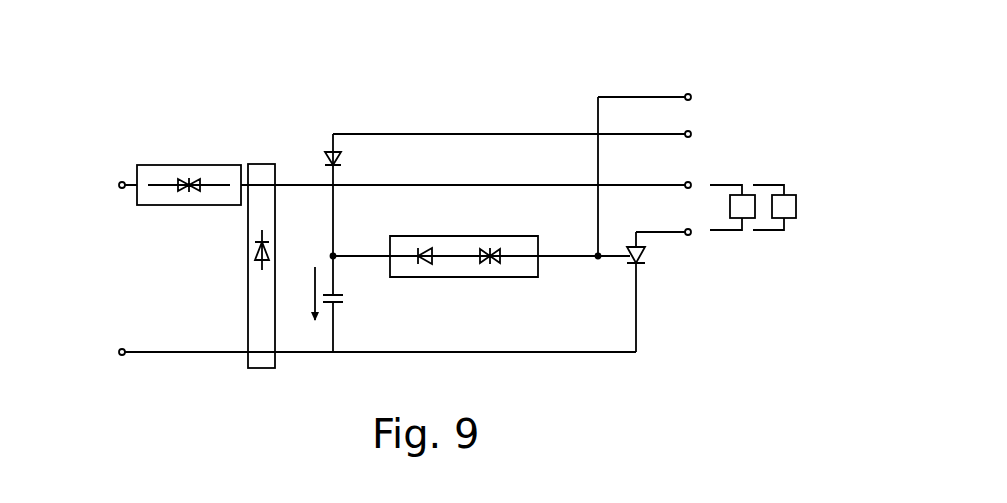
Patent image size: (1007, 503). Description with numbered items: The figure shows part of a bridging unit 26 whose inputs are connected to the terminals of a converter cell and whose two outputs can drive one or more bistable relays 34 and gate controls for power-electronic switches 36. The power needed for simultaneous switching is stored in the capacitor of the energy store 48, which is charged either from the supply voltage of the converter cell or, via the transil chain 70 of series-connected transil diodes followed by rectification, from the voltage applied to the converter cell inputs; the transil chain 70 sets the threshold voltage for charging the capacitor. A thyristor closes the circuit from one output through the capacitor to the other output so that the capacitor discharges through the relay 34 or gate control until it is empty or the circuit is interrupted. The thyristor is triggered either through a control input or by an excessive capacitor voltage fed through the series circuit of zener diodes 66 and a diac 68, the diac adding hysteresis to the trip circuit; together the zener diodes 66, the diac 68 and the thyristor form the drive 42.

The bridging unit 26 is at (310, 66).
The transil chain 70 is at (180, 207).
The energy store 48 is at (296, 341).
The diac 68 is at (425, 268).
The zener diodes 66 is at (490, 270).
The bistable relay 34 is at (745, 218).
The power-electronic switch 36 is at (786, 218).
The drive 42 is at (623, 377).